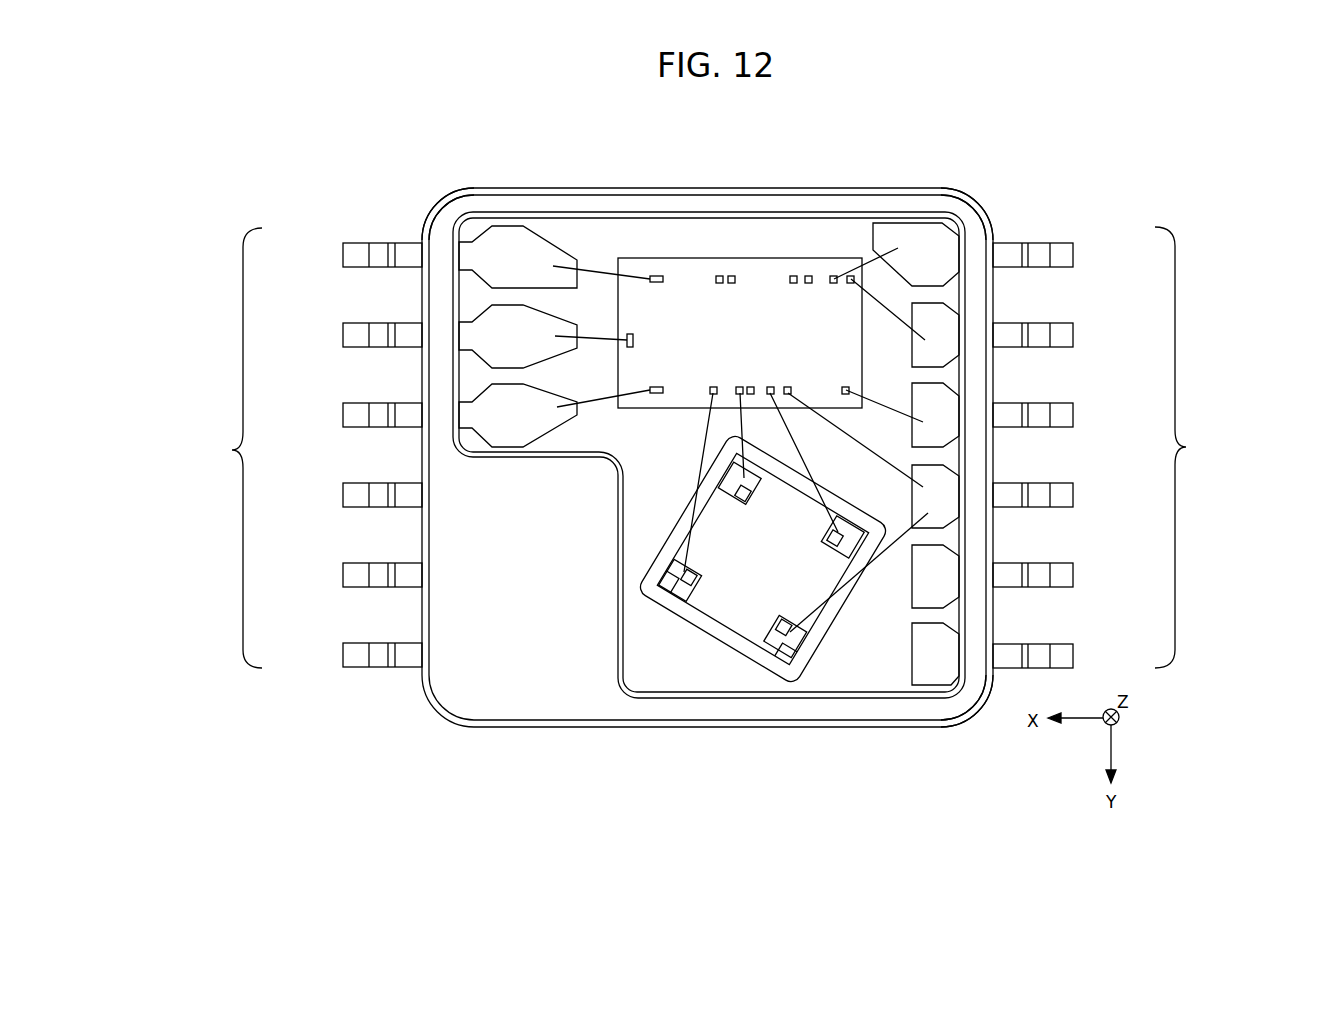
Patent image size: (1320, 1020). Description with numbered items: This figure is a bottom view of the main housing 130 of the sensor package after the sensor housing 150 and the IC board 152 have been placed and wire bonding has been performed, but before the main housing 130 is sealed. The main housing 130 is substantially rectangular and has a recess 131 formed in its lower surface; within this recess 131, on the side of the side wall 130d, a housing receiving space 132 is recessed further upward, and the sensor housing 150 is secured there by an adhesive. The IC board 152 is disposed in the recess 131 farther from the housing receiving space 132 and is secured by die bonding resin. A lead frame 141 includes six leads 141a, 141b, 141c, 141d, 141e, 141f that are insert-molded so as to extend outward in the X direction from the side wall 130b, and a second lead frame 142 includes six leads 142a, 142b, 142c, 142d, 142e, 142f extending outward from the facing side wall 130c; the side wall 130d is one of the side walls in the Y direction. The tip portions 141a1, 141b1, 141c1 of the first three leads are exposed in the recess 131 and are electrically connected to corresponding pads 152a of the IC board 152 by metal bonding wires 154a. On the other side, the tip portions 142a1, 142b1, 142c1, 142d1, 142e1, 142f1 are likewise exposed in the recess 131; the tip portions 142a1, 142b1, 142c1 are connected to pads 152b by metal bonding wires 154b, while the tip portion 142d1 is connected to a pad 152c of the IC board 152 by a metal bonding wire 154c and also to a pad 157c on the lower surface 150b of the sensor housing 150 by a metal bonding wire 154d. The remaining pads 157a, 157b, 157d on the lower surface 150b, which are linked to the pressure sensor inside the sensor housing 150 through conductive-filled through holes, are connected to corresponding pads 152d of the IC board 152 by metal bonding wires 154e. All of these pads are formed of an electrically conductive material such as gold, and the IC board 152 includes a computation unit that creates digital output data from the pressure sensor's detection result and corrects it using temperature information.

The main housing 130 is at (497, 708).
The side wall 130b is at (438, 196).
The side wall 130c is at (975, 196).
The side wall 130d is at (917, 730).
The recess 131 is at (640, 657).
The housing receiving space 132 is at (769, 669).
The lead frame 141 is at (232, 450).
The lead 141a is at (341, 257).
The lead 141b is at (341, 337).
The lead 141c is at (341, 417).
The lead 141d is at (341, 497).
The lead 141e is at (341, 577).
The lead 141f is at (338, 657).
The tip portion 141a1 is at (530, 245).
The tip portion 141b1 is at (473, 330).
The tip portion 141c1 is at (473, 410).
The lead frame 142 is at (1188, 447).
The lead 142a is at (1072, 257).
The lead 142b is at (1072, 337).
The lead 142c is at (1072, 417).
The lead 142d is at (1072, 497).
The lead 142e is at (1072, 577).
The lead 142f is at (1072, 657).
The tip portion 142a1 is at (947, 243).
The tip portion 142b1 is at (947, 323).
The tip portion 142c1 is at (947, 405).
The tip portion 142d1 is at (947, 487).
The tip portion 142e1 is at (947, 565).
The tip portion 142f1 is at (947, 645).
The sensor housing 150 is at (750, 627).
The lower surface 150b is at (727, 610).
The IC board 152 is at (752, 268).
The pad 152a is at (655, 277).
The pad 152b is at (833, 276).
The pad 152c is at (789, 398).
The pad 152d is at (788, 350).
The metal bonding wire 154a is at (587, 270).
The metal bonding wire 154b is at (885, 254).
The metal bonding wire 154c is at (893, 467).
The metal bonding wire 154d is at (893, 543).
The metal bonding wire 154e is at (742, 418).
The pad 157a is at (735, 492).
The pad 157b is at (685, 585).
The pad 157c is at (793, 640).
The pad 157d is at (833, 545).